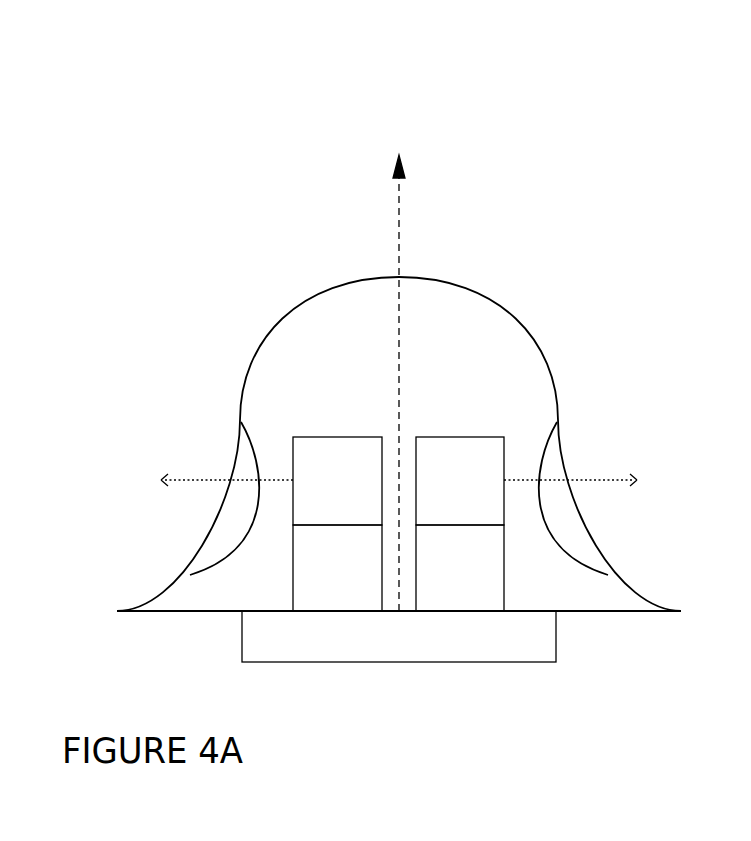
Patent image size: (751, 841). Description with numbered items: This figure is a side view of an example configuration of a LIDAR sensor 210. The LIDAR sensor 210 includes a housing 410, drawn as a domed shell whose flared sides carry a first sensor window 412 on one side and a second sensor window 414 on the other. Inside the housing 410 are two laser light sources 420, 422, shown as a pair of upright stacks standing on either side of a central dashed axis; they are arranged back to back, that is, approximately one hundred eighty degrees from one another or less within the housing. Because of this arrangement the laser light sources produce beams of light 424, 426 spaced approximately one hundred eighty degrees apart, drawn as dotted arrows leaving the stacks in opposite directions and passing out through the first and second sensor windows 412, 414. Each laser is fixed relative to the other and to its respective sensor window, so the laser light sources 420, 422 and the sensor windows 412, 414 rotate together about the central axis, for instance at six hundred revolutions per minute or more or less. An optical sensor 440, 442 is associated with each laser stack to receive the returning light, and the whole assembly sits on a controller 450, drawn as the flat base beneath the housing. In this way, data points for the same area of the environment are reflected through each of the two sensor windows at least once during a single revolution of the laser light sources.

The LIDAR sensor 210 is at (745, 0).
The housing 410 is at (267, 335).
The first sensor window 412 is at (215, 525).
The second sensor window 414 is at (580, 525).
The laser light source 420 is at (293, 463).
The laser light source 422 is at (504, 463).
The beam of light 424 is at (160, 481).
The beam of light 426 is at (645, 483).
The optical sensor 440 is at (293, 595).
The optical sensor 442 is at (504, 595).
The controller 450 is at (556, 662).